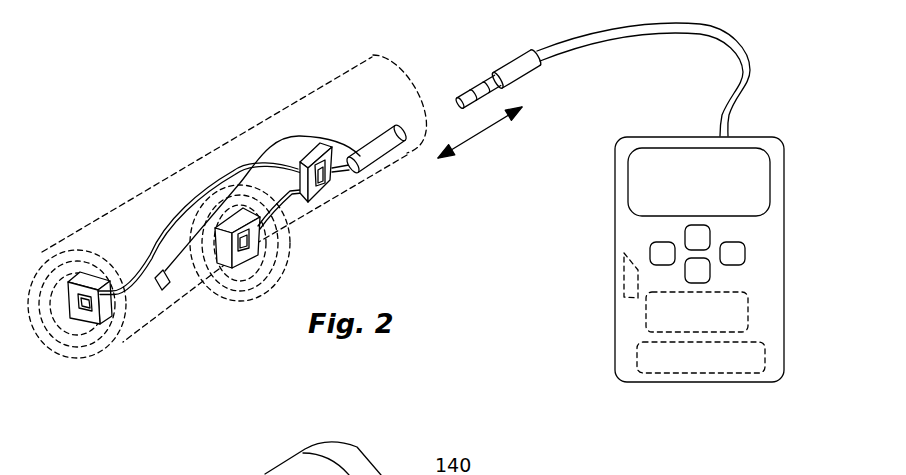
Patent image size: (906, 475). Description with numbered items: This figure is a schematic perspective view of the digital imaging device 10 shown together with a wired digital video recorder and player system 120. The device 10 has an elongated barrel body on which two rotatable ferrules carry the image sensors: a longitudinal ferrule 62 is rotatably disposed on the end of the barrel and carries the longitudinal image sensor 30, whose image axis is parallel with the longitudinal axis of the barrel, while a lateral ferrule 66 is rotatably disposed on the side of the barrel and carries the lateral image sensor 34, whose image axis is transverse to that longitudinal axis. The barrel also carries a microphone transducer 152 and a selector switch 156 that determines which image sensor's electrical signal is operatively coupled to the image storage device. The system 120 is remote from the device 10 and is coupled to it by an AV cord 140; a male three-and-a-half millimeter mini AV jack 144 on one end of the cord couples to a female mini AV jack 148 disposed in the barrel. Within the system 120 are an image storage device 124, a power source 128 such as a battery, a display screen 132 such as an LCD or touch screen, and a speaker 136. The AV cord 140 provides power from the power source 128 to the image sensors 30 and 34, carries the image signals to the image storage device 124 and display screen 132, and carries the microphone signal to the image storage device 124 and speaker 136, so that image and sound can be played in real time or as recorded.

The digital imaging device 10 is at (262, 99).
The longitudinal image sensor 30 is at (99, 326).
The lateral image sensor 34 is at (235, 268).
The longitudinal ferrule 62 is at (50, 250).
The lateral ferrule 66 is at (213, 282).
The digital video recorder and player system 120 is at (600, 242).
The image storage device 124 is at (652, 313).
The power source 128 is at (748, 348).
The display screen 132 is at (693, 172).
The speaker 136 is at (624, 297).
The AV cord 140 is at (650, 32).
The male 3.5 mm mini AV jack 144 is at (507, 62).
The female 3.5 mm mini AV jack 148 is at (386, 150).
The microphone transducer 152 is at (157, 272).
The selector switch 156 is at (320, 195).